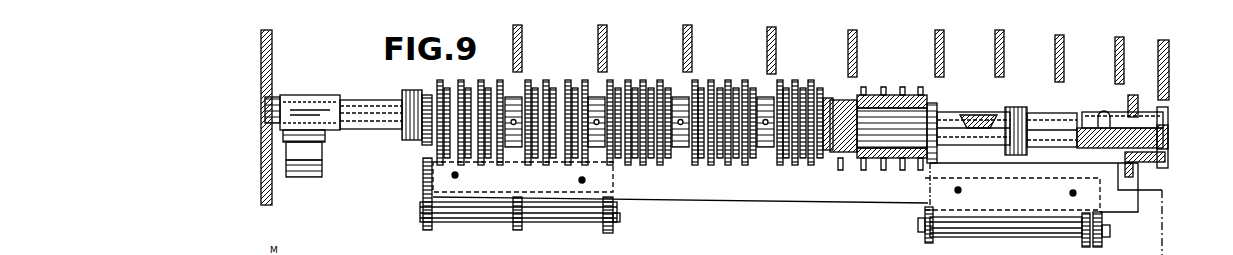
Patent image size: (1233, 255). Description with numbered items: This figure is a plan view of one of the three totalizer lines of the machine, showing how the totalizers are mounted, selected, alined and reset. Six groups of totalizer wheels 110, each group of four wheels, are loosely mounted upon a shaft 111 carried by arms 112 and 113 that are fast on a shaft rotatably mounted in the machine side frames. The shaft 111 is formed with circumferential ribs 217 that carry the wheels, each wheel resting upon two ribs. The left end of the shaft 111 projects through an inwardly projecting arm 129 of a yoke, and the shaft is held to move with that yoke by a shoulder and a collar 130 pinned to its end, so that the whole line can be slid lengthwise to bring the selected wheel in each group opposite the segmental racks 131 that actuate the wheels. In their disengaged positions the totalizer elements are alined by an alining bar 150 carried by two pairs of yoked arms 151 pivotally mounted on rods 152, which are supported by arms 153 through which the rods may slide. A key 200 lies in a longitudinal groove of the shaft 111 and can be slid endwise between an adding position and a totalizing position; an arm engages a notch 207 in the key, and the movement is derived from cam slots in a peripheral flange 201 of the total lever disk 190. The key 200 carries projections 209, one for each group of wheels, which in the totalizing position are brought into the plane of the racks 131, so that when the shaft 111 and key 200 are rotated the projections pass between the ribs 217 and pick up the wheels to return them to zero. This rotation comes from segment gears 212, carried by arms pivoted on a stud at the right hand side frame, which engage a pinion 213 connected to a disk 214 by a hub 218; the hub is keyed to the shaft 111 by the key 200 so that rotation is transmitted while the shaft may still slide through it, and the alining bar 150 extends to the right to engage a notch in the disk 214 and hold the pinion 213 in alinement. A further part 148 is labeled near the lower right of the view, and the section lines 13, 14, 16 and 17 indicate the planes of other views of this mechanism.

The section line for FIG. 13 is at (398, 250).
The section line for FIG. 14 is at (930, 175).
The section line for FIG. 16 is at (1120, 190).
The section line for FIG. 17 is at (1232, 180).
The totalizer wheels 110 is at (587, 80).
The shaft 111 is at (358, 130).
The arm 112 is at (412, 146).
The arm 113 is at (1022, 113).
The inwardly projecting arm 129 is at (300, 177).
The collar 130 is at (268, 117).
The segmental racks 131 is at (767, 45).
The lever 148 is at (1213, 246).
The alining bar 150 is at (716, 193).
The yoked arms 151 is at (615, 205).
The rods 152 is at (582, 226).
The arms 153 is at (516, 232).
The total lever disk 190 is at (1163, 243).
The key 200 is at (968, 116).
The peripheral flange 201 is at (1140, 253).
The notch 207 is at (1100, 116).
The projections 209 is at (933, 106).
The segment gears 212 is at (1169, 72).
The pinion 213 is at (1166, 165).
The disk 214 is at (1133, 95).
The circumferential ribs 217 is at (903, 168).
The hub 218 is at (1160, 128).